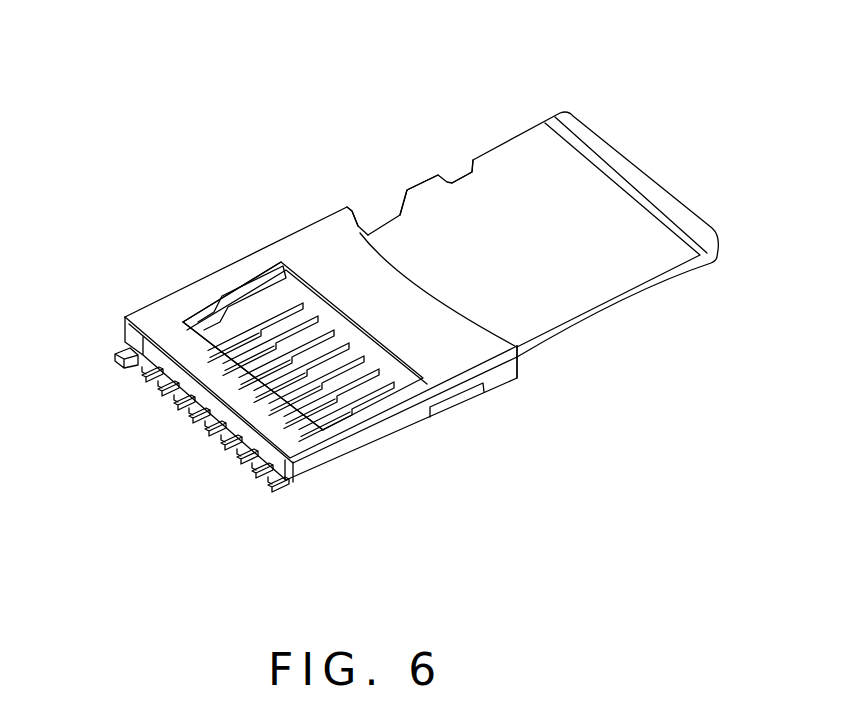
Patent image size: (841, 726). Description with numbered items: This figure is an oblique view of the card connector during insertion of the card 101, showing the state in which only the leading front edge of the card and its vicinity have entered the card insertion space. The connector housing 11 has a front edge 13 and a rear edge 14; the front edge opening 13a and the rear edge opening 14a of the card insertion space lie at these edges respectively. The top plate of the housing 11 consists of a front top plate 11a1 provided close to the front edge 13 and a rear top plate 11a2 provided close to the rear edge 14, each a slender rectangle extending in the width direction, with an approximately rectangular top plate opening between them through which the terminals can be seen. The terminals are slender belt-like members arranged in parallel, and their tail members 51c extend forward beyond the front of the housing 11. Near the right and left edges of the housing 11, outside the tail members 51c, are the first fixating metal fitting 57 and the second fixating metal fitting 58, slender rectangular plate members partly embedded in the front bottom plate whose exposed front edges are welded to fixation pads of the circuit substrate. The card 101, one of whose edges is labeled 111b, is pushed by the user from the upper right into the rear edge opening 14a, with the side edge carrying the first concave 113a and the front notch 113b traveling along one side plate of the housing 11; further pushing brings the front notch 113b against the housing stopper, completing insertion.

The housing 11 is at (518, 377).
The front top plate 11a1 is at (168, 327).
The rear top plate 11a2 is at (335, 237).
The front edge 13 is at (123, 328).
The front edge opening 13a is at (145, 368).
The rear edge 14 is at (519, 358).
The rear edge opening 14a is at (361, 225).
The tail member 51c is at (253, 473).
The first fixating metal fitting 57 is at (282, 488).
The second fixating metal fitting 58 is at (118, 358).
The card 101 is at (653, 172).
The card edge 111b is at (699, 215).
The first concave 113a is at (461, 168).
The front notch 113b is at (400, 207).